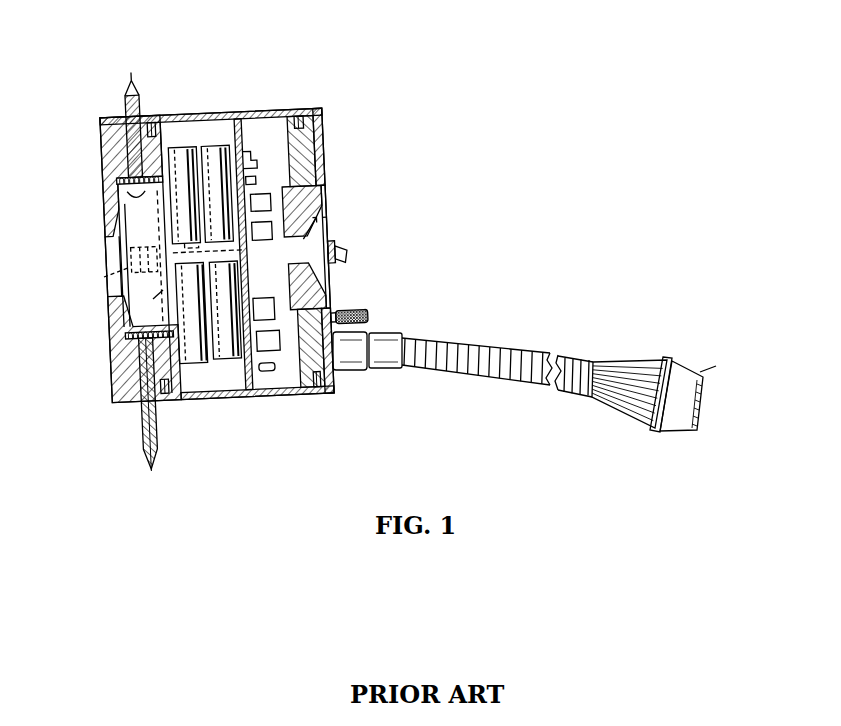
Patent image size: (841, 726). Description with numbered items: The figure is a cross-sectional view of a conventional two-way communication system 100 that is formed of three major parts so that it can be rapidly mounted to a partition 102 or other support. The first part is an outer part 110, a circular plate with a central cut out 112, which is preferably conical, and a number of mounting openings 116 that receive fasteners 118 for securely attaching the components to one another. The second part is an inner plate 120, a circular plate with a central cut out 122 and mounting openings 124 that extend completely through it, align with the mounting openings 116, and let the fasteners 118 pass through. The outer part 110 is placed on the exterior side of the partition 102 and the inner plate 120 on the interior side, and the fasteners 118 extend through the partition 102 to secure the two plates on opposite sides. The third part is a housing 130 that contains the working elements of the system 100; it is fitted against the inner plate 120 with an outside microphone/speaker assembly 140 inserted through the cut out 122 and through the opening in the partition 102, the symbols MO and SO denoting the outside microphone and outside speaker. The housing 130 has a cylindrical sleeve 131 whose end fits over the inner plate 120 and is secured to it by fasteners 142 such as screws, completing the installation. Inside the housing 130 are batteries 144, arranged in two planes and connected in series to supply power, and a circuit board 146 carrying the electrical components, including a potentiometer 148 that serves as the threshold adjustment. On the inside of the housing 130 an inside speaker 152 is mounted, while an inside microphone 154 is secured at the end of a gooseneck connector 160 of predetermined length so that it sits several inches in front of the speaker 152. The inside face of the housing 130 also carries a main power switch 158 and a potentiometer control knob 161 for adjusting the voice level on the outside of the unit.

The two-way communication system 100 is at (404, 262).
The partition 102 is at (139, 95).
The outer part 110 is at (108, 168).
The central cut out 112 is at (110, 288).
The mounting openings 116 is at (125, 328).
The fasteners 118 is at (107, 349).
The inner plate 120 is at (218, 111).
The central cut out 122 is at (142, 192).
The mounting openings 124 is at (128, 135).
The housing 130 is at (234, 108).
The cylindrical sleeve 131 is at (223, 400).
The outside microphone/speaker assembly 140 is at (129, 233).
The fasteners 142 is at (157, 120).
The batteries 144 is at (180, 148).
The circuit board 146 is at (236, 132).
The potentiometer 148 is at (248, 165).
The inside speaker 152 is at (310, 220).
The inside microphone 154 is at (703, 430).
The main power switch 158 is at (342, 256).
The gooseneck connector 160 is at (418, 363).
The potentiometer control knob 161 is at (360, 304).